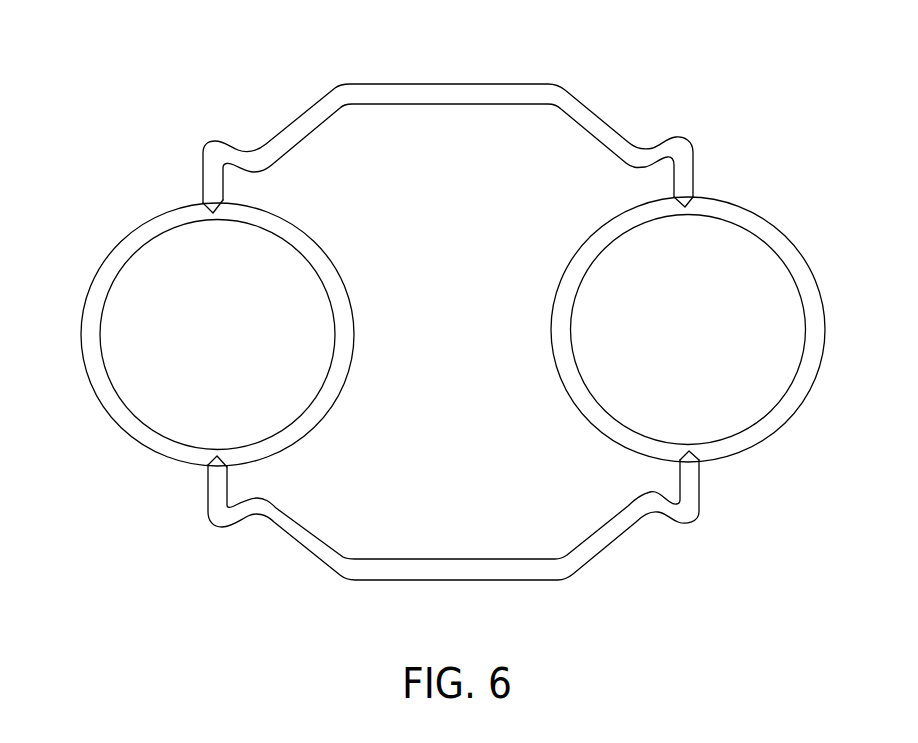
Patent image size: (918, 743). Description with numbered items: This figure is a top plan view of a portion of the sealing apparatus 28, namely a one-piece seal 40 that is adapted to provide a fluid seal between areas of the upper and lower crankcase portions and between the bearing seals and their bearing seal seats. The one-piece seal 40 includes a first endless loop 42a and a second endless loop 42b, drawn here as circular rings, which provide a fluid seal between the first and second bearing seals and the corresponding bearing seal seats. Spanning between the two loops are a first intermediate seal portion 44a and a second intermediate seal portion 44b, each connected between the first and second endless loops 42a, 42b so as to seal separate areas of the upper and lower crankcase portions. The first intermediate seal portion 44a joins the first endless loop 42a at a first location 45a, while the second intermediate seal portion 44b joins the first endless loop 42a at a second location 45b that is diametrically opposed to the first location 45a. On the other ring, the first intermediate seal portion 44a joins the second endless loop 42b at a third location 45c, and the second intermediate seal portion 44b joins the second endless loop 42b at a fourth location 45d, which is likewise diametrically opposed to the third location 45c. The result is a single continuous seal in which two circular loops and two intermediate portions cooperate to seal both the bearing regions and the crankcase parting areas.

The sealing apparatus 28 is at (752, 102).
The one-piece seal 40 is at (667, 98).
The first endless loop 42a is at (813, 272).
The second endless loop 42b is at (90, 278).
The first intermediate seal portion 44a is at (447, 83).
The second intermediate seal portion 44b is at (527, 582).
The first location 45a is at (702, 193).
The second location 45b is at (700, 462).
The third location 45c is at (202, 203).
The fourth location 45d is at (203, 472).